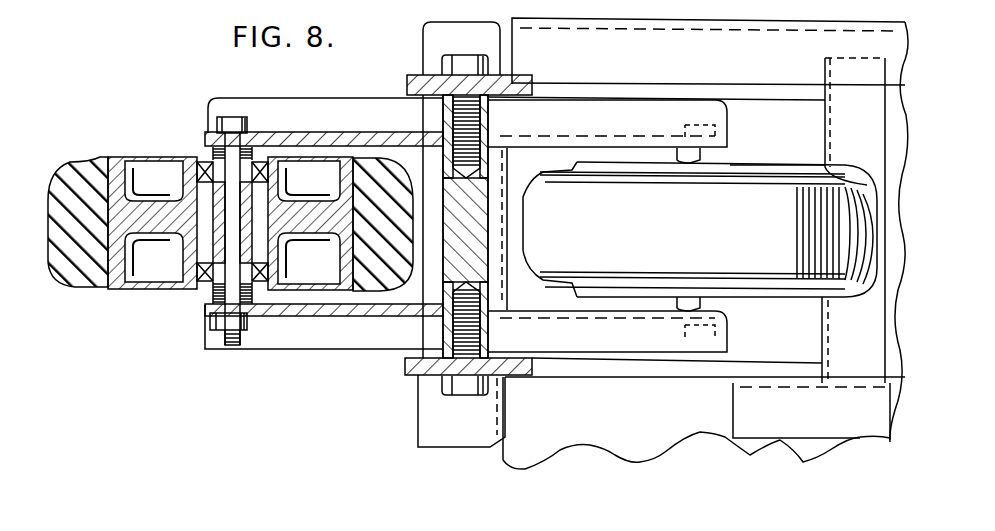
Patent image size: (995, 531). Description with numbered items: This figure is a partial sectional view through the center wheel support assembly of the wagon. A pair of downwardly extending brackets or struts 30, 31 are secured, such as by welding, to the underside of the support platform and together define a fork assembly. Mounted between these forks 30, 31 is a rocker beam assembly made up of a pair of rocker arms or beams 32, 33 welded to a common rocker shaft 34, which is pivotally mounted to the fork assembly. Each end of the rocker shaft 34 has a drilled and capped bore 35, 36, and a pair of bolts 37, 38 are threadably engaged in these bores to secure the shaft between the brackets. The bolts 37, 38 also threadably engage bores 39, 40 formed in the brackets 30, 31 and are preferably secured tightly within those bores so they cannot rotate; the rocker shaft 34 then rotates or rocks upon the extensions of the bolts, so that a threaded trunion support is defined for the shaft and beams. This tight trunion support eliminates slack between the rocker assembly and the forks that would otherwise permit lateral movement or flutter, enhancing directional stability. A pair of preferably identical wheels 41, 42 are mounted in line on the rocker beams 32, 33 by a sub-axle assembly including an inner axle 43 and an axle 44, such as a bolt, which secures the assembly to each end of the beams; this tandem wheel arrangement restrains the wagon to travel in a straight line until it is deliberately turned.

The bracket or strut 30 is at (600, 78).
The bracket or strut 31 is at (552, 380).
The rocker arm or beam 32 is at (333, 99).
The rocker arm or beam 33 is at (302, 340).
The rocker shaft 34 is at (450, 262).
The drilled and capped bore 35 is at (458, 113).
The drilled and capped bore 36 is at (458, 332).
The bolt 37 is at (470, 45).
The bolt 38 is at (470, 395).
The bore 39 is at (466, 76).
The bore 40 is at (433, 376).
The wheel 41 is at (90, 168).
The wheel 42 is at (777, 170).
The inner axle 43 is at (217, 195).
The axle 44 is at (233, 118).